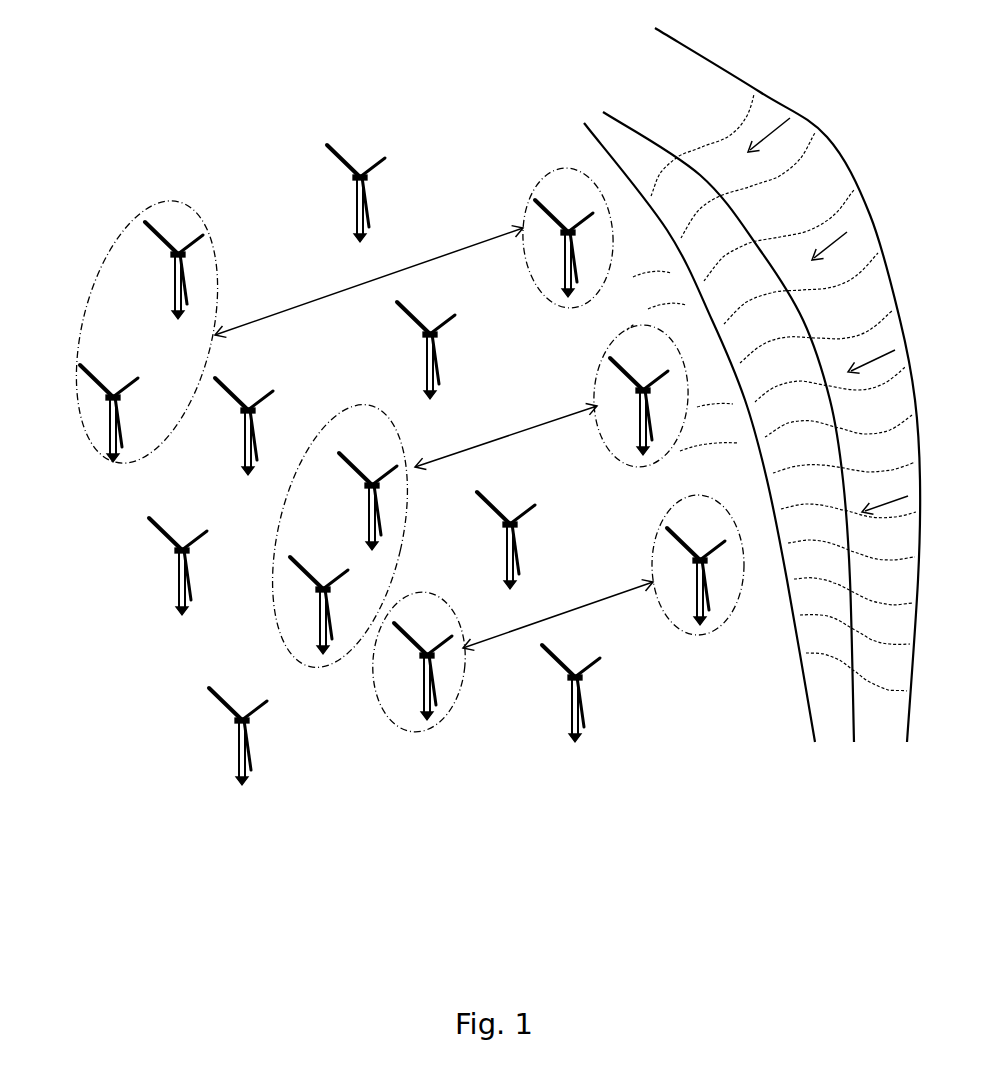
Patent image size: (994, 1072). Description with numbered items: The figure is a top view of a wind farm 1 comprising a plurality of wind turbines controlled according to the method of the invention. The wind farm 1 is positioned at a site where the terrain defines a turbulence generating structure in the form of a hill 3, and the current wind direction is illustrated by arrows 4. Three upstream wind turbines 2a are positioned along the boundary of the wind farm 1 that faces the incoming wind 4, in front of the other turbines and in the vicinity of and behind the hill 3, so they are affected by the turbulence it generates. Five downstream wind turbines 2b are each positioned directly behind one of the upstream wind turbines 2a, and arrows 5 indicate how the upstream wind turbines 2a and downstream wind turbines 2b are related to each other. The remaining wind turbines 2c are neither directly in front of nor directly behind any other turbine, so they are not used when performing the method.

The wind farm 1 is at (180, 845).
The upstream wind turbines 2a is at (560, 235).
The downstream wind turbines 2b is at (178, 282).
The remaining wind turbines 2c is at (358, 205).
The hill 3 is at (858, 618).
The arrows indicating wind direction 4 is at (777, 130).
The arrows relating upstream and downstream wind turbines 5 is at (372, 282).